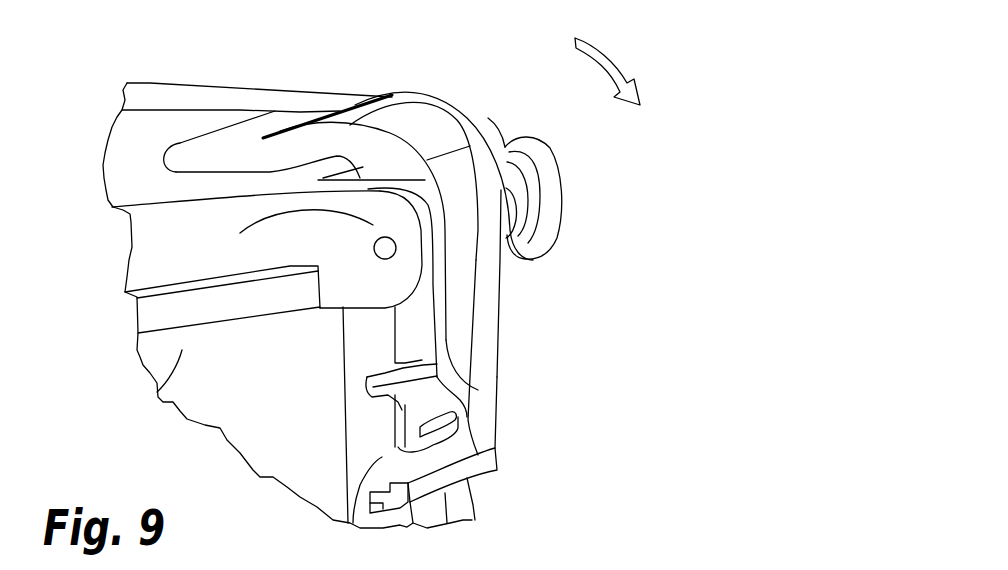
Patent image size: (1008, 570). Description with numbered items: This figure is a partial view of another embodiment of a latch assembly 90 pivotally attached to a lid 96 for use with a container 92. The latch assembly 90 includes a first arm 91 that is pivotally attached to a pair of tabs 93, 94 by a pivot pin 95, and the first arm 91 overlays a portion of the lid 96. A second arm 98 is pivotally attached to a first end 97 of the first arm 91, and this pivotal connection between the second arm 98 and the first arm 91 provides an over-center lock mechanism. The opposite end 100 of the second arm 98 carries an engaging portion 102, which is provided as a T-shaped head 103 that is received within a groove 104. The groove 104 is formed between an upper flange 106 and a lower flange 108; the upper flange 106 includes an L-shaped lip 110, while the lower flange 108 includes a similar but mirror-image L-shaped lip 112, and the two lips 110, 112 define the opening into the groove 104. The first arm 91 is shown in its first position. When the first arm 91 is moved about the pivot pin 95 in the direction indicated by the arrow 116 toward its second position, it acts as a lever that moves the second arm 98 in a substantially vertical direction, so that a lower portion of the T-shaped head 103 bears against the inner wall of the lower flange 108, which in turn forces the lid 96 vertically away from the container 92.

The latch assembly 90 is at (572, 258).
The first arm 91 is at (398, 117).
The container 92 is at (155, 388).
The tab 93 is at (262, 218).
The tab 94 is at (536, 150).
The pivot pin 95 is at (383, 248).
The lid 96 is at (157, 130).
The first end 97 is at (468, 118).
The second arm 98 is at (488, 317).
The opposite end 100 is at (460, 428).
The engaging portion 102 is at (452, 393).
The T-shaped head 103 is at (380, 447).
The groove 104 is at (348, 522).
The upper flange 106 is at (377, 387).
The lower flange 108 is at (455, 487).
The L-shaped lip 110 is at (393, 407).
The L-shaped lip 112 is at (490, 470).
The arrow 116 is at (600, 60).